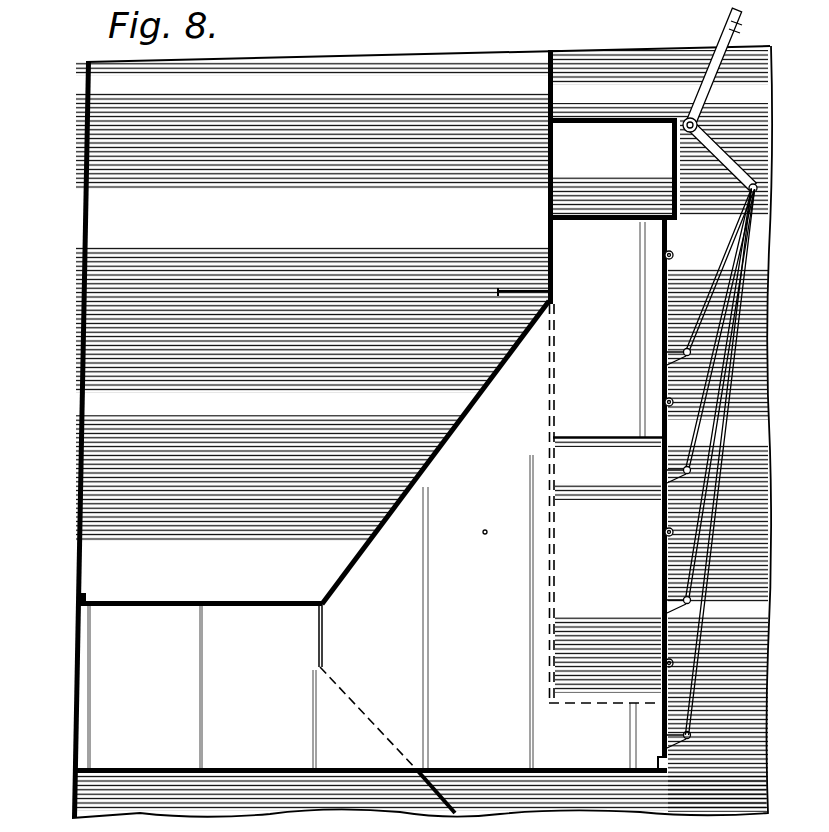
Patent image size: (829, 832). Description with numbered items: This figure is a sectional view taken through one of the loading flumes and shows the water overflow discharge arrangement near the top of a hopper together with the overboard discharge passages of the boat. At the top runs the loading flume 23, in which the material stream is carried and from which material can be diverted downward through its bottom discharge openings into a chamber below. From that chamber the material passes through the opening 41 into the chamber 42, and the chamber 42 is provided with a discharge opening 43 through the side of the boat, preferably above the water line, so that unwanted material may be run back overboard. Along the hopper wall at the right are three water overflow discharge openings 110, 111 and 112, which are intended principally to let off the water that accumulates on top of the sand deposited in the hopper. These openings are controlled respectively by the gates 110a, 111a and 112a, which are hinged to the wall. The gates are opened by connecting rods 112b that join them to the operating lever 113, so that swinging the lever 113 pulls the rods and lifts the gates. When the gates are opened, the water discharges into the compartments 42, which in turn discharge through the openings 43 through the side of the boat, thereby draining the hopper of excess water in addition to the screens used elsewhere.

The loading flume 23 is at (594, 170).
The opening 41 is at (583, 505).
The chamber 42 is at (456, 622).
The discharge opening 43 is at (98, 640).
The discharge opening 110 is at (662, 331).
The gate 110a is at (676, 272).
The discharge opening 111 is at (662, 466).
The gate 111a is at (672, 418).
The discharge opening 112 is at (665, 579).
The gate 112a is at (672, 545).
The connecting rods 112b is at (718, 326).
The operating lever 113 is at (727, 152).